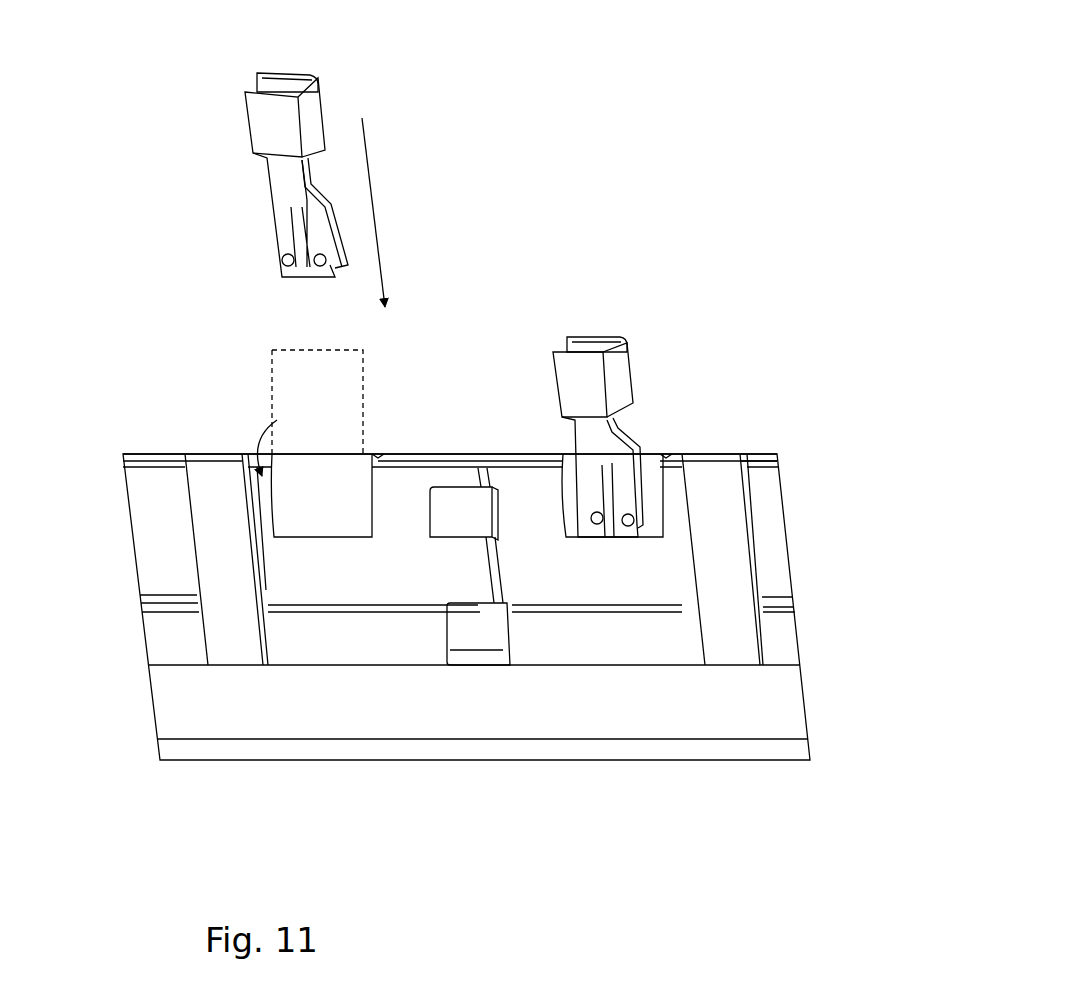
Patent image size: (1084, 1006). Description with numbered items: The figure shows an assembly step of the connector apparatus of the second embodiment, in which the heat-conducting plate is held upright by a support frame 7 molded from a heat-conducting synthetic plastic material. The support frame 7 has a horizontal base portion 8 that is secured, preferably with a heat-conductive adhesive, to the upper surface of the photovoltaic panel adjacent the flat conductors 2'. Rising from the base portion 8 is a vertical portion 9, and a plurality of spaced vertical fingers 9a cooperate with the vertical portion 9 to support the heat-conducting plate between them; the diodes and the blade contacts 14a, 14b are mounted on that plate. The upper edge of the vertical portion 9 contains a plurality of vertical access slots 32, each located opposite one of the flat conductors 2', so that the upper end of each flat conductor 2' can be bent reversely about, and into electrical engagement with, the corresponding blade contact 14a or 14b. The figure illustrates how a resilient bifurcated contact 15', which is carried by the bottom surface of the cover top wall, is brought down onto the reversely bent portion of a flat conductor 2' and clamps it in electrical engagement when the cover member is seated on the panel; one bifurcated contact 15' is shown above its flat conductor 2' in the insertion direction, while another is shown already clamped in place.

The support frame 7 is at (812, 762).
The horizontal base portion 8 is at (687, 710).
The vertical portion 9 is at (470, 452).
The vertical fingers 9a is at (217, 508).
The blade contact 14a is at (402, 575).
The blade contact 14b is at (558, 577).
The flat conductor 2' is at (359, 406).
The vertical access slot 32 is at (380, 453).
The resilient bifurcated contact 15' is at (442, 305).